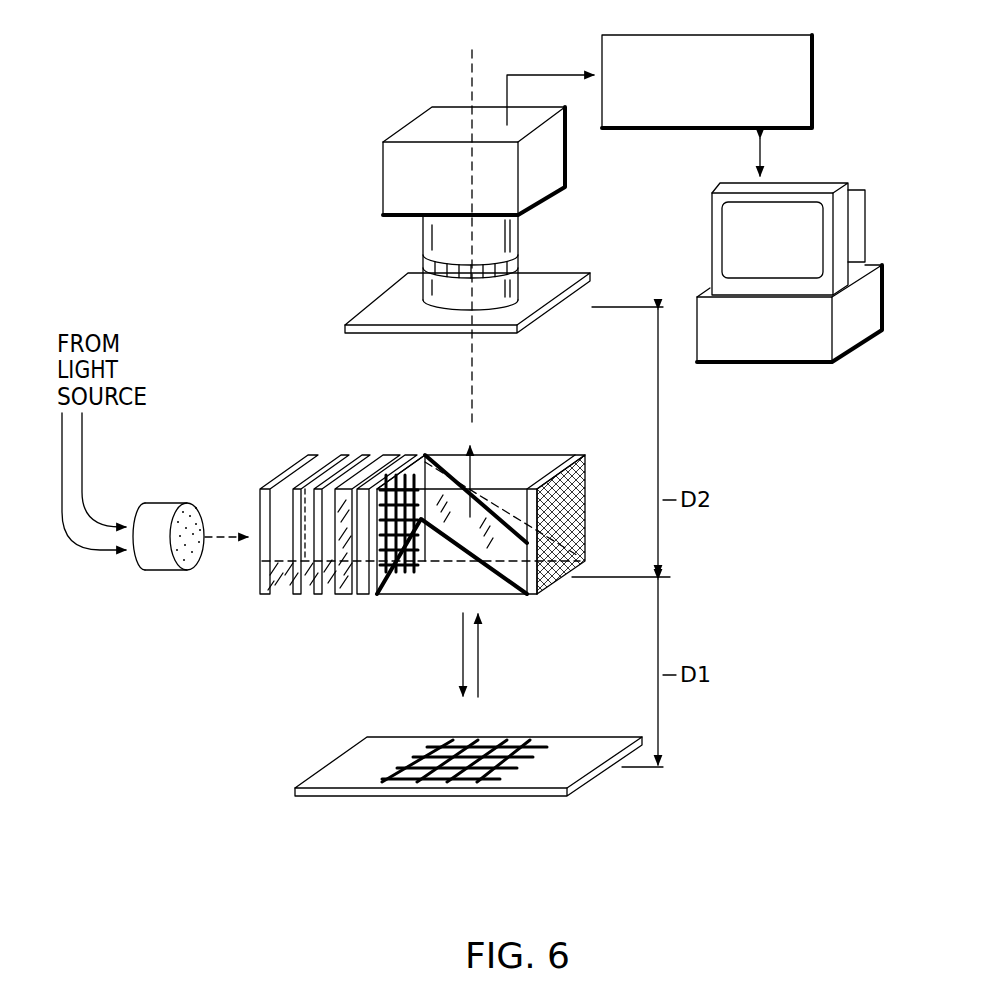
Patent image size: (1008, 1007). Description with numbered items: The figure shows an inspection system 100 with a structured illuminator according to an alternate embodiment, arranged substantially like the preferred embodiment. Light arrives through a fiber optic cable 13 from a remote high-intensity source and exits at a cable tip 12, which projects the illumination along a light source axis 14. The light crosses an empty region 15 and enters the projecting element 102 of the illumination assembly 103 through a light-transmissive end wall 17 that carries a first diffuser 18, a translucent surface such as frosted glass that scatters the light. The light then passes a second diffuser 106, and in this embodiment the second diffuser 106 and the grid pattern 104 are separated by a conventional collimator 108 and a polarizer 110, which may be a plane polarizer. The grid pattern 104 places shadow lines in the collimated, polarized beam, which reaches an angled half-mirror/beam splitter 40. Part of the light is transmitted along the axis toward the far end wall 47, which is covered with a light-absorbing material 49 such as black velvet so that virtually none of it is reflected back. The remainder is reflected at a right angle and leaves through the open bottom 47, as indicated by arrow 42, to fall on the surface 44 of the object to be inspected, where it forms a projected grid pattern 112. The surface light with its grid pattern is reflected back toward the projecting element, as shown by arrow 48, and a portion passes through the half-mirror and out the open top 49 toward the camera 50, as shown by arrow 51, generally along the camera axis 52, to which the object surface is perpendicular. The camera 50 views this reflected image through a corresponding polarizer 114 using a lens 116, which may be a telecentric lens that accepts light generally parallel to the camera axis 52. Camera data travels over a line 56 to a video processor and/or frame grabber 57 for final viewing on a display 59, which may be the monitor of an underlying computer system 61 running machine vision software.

The inspection system 100 is at (323, 73).
The camera axis 52 is at (475, 73).
The line 56 is at (548, 74).
The video processor and/or frame grabber 57 is at (625, 44).
The camera 50 is at (557, 163).
The lens 116 is at (488, 241).
The polarizer 114 is at (397, 296).
The display 59 is at (813, 228).
The computer system 61 is at (870, 298).
The illumination assembly 103 is at (197, 457).
The fiber optic cable 13 is at (168, 496).
The cable tip 12 is at (160, 553).
The light source axis 14 is at (207, 538).
The empty region 15 is at (243, 515).
The light-transmissive end wall 17 is at (279, 461).
The first diffuser 18 is at (290, 568).
The second diffuser 106 is at (298, 599).
The collimator 108 is at (313, 594).
The polarizer 110 is at (351, 597).
The grid pattern 104 is at (399, 553).
The far end wall 47 is at (573, 456).
The half-mirror/beam splitter 40 is at (503, 552).
The arrow 51 is at (474, 437).
The light-absorbing material 49 is at (497, 472).
The projecting element 102 is at (538, 444).
The arrow 42 is at (461, 663).
The arrow 48 is at (480, 663).
The projected grid pattern 112 is at (514, 732).
The surface 44 is at (573, 775).